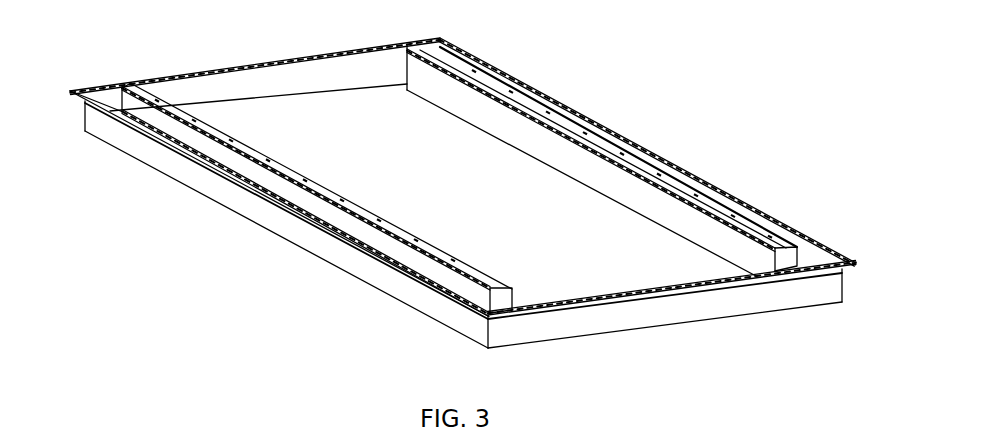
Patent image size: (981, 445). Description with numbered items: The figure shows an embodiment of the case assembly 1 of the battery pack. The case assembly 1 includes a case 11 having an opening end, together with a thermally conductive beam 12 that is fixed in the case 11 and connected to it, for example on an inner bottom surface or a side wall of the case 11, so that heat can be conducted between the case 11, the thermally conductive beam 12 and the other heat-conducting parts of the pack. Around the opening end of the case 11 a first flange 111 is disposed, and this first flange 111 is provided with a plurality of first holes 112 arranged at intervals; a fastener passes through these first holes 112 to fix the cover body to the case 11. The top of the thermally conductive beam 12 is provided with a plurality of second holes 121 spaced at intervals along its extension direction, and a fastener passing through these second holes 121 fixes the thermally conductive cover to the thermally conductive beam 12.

The case assembly 1 is at (458, 217).
The case 11 is at (463, 217).
The first flange 111 is at (407, 272).
The first holes 112 is at (207, 162).
The thermally conductive beam 12 is at (428, 182).
The second holes 121 is at (187, 108).